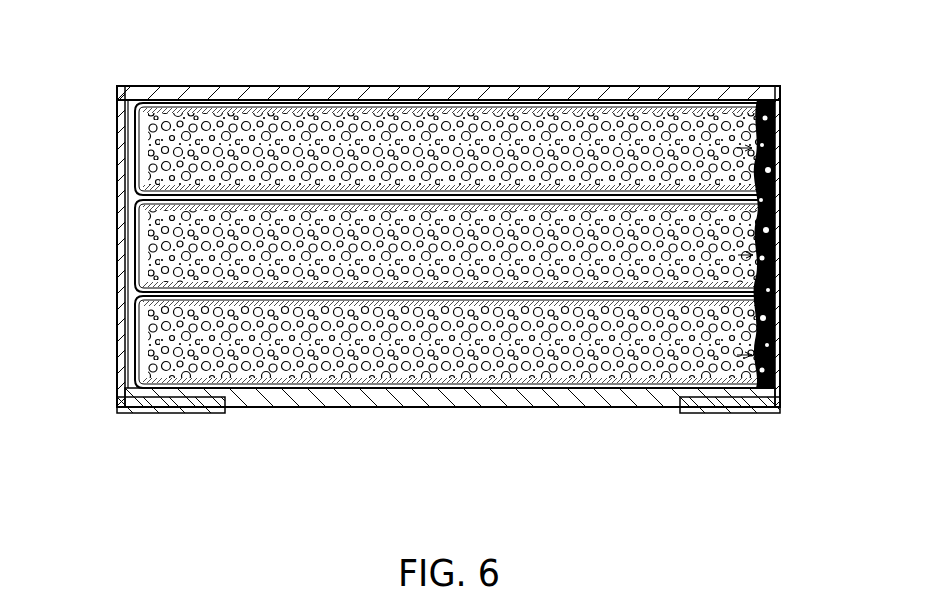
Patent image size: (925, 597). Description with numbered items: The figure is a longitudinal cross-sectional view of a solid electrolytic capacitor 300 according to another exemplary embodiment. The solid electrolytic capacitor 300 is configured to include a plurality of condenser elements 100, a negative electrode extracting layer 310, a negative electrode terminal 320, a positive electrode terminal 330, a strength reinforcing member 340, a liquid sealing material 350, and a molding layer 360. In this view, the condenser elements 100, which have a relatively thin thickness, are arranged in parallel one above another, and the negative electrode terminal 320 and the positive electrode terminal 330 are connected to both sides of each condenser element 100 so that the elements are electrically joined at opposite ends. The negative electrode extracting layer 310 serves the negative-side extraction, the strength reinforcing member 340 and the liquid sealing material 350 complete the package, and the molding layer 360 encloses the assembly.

The condenser element 100 is at (780, 155).
The solid electrolytic capacitor 300 is at (280, 30).
The negative electrode extracting layer 310 is at (125, 200).
The negative electrode terminal 320 is at (121, 293).
The positive electrode terminal 330 is at (779, 343).
The strength reinforcing member 340 is at (170, 405).
The liquid sealing material 350 is at (460, 410).
The molding layer 360 is at (592, 92).